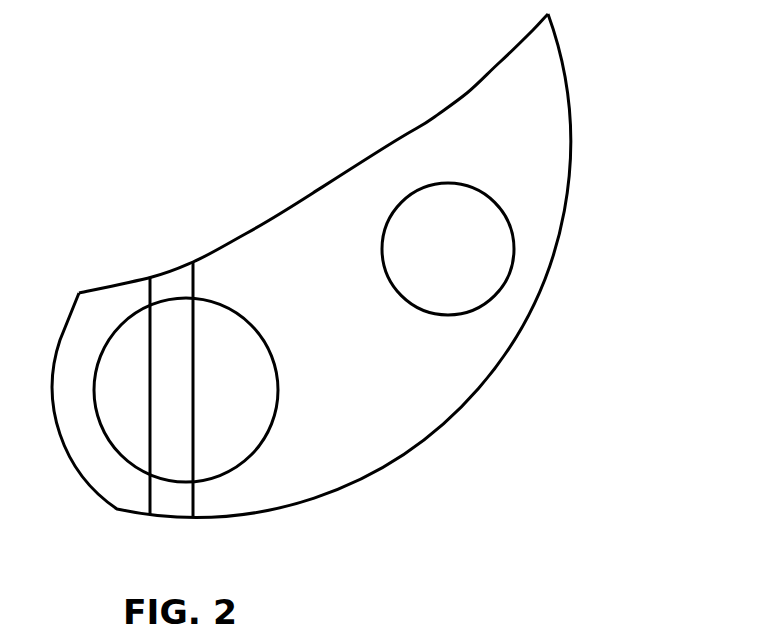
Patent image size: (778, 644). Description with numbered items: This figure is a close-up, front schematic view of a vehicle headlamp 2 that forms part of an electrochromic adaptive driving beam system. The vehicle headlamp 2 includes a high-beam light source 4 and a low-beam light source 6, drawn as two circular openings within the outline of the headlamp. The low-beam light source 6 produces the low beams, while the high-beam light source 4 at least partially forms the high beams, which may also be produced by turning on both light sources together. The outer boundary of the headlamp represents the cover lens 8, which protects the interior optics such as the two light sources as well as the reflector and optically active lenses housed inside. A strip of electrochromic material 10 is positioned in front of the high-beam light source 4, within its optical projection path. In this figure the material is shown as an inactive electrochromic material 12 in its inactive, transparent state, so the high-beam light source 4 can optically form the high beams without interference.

The vehicle headlamp 2 is at (335, 291).
The high-beam light source 4 is at (97, 378).
The low-beam light source 6 is at (510, 230).
The cover lens 8 is at (570, 142).
The electrochromic material 10 is at (150, 299).
The inactive electrochromic material 12 is at (163, 505).